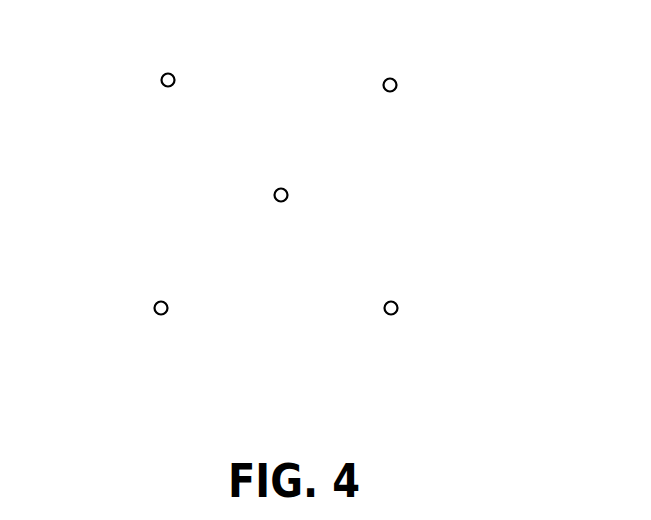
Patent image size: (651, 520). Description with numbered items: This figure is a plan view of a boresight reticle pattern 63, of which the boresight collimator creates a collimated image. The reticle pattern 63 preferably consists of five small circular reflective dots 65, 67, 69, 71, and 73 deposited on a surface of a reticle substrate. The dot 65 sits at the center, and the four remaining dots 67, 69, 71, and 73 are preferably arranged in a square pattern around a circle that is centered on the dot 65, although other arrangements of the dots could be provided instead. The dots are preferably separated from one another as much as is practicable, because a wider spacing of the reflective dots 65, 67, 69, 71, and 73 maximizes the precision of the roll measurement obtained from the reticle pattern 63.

The reticle pattern 63 is at (178, 229).
The reflective dot 65 is at (288, 193).
The reflective dot 67 is at (397, 80).
The reflective dot 69 is at (161, 83).
The reflective dot 71 is at (154, 310).
The reflective dot 73 is at (398, 307).